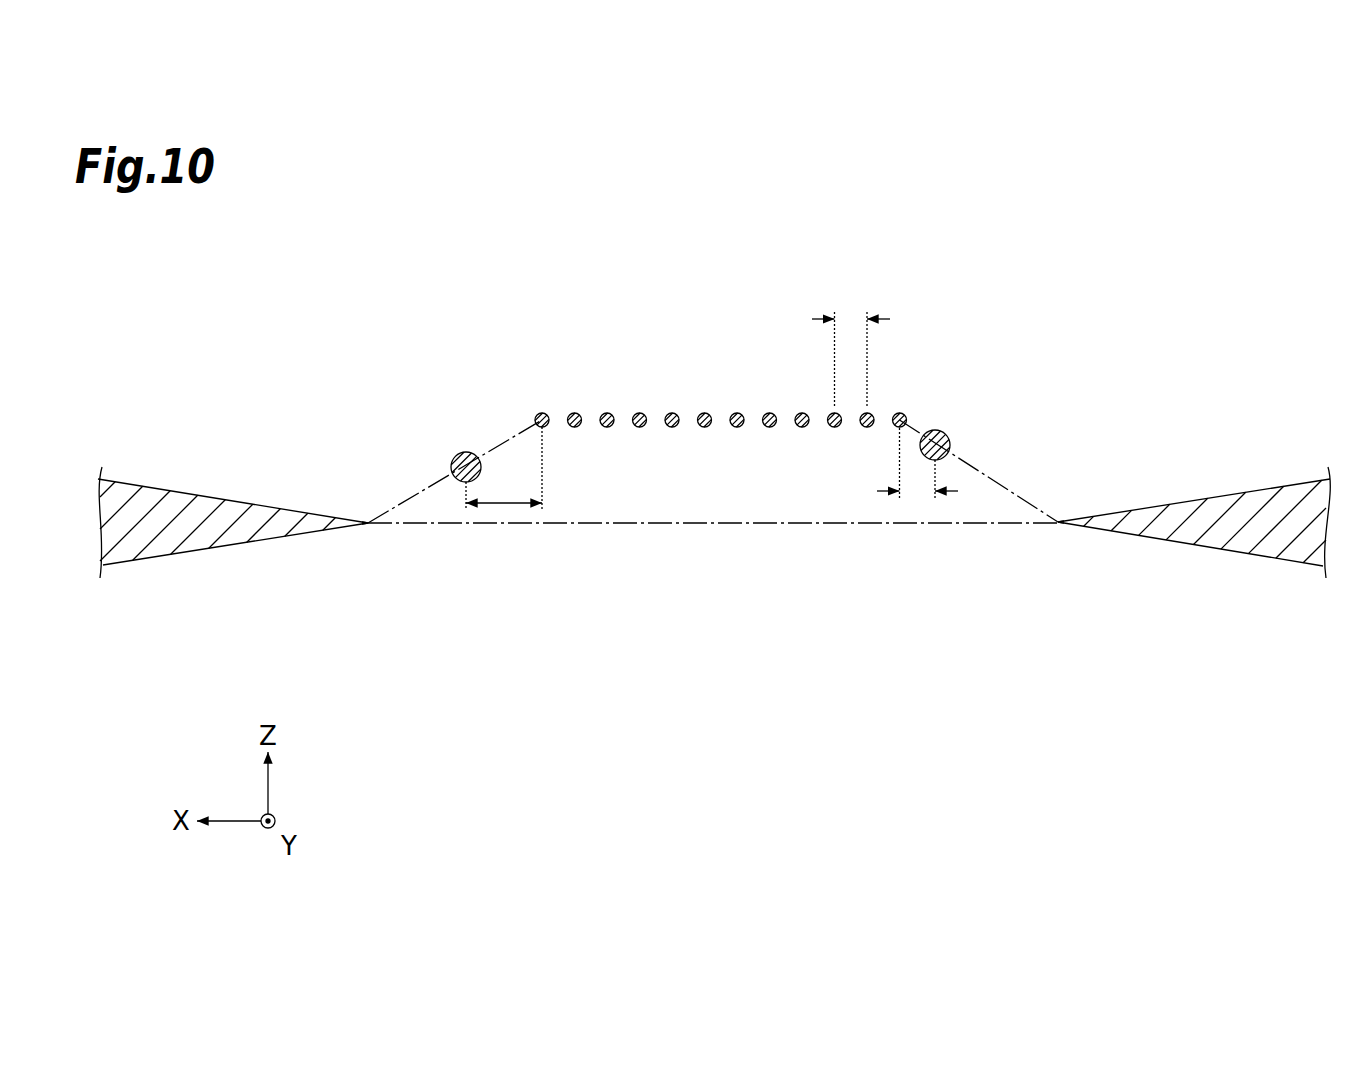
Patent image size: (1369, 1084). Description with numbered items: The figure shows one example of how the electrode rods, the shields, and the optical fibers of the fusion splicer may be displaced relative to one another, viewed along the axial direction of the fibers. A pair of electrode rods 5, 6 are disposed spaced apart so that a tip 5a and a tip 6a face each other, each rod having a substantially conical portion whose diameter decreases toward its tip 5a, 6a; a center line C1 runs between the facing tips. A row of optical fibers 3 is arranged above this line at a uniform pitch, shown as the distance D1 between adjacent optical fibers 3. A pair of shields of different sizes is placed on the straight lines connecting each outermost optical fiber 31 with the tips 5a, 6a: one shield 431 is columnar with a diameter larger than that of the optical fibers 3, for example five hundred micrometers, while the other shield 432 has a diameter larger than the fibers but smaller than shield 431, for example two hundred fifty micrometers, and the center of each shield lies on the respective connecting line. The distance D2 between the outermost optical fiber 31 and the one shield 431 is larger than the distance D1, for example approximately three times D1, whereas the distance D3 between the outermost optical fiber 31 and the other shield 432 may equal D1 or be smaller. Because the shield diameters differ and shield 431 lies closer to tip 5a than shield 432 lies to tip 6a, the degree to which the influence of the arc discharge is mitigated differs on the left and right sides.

The optical fibers 3 is at (573, 413).
The outermost optical fiber 31 is at (540, 413).
The one shield 431 is at (466, 452).
The other shield 432 is at (942, 432).
The electrode rod 5 is at (214, 546).
The tip 5a is at (369, 526).
The electrode rod 6 is at (1193, 538).
The tip 6a is at (1058, 526).
The center line C1 is at (745, 525).
The distance between the optical fibers D1 is at (848, 313).
The distance between the outermost optical fiber and the one shield D2 is at (505, 504).
The distance between the outermost optical fiber and the other shield D3 is at (917, 492).